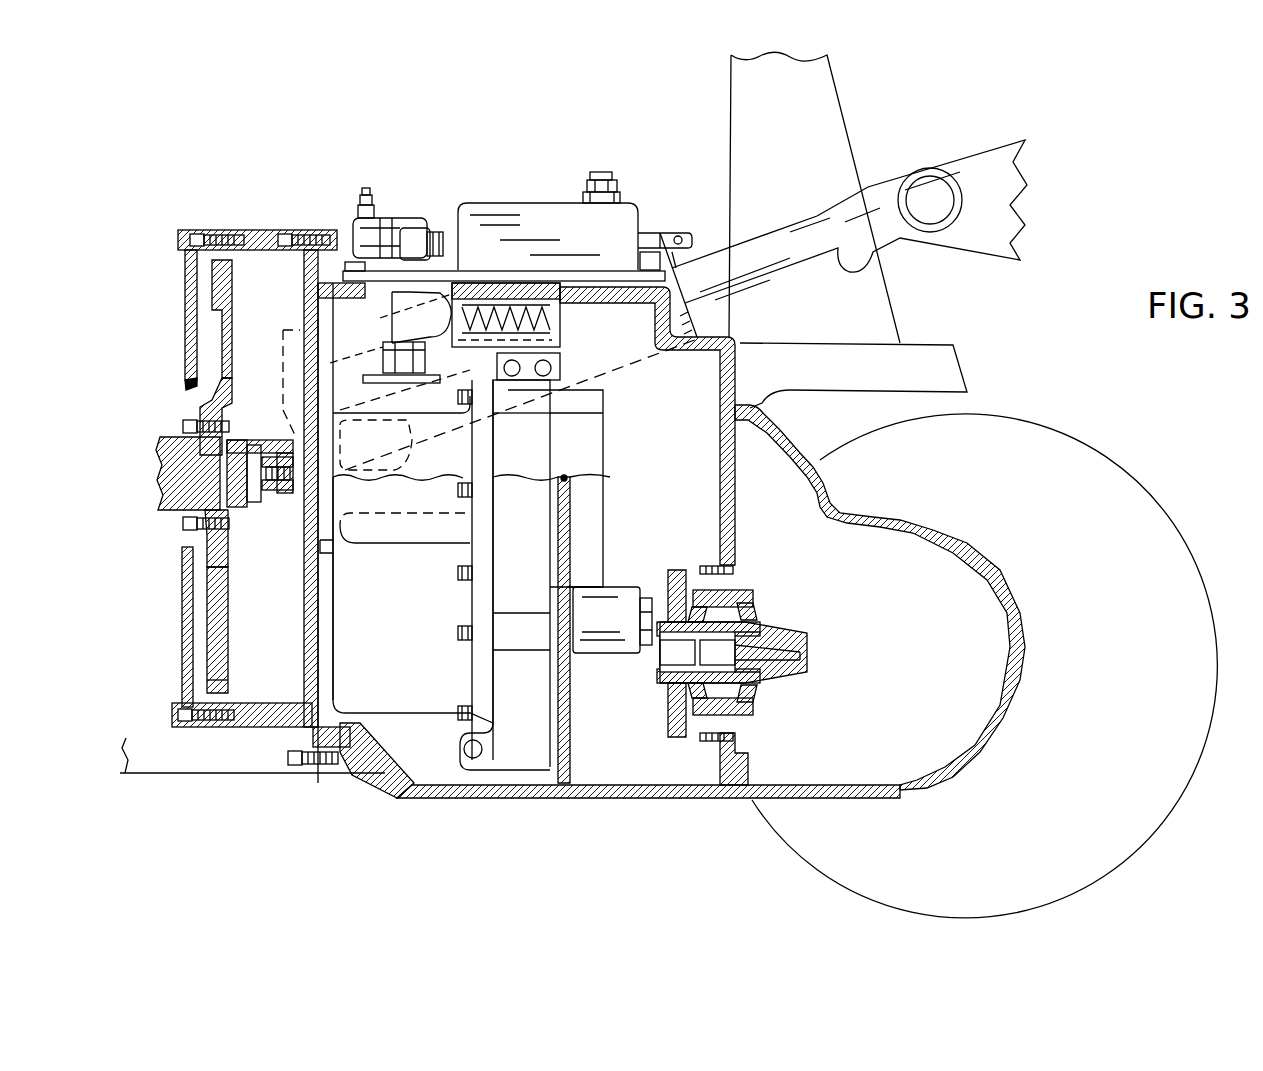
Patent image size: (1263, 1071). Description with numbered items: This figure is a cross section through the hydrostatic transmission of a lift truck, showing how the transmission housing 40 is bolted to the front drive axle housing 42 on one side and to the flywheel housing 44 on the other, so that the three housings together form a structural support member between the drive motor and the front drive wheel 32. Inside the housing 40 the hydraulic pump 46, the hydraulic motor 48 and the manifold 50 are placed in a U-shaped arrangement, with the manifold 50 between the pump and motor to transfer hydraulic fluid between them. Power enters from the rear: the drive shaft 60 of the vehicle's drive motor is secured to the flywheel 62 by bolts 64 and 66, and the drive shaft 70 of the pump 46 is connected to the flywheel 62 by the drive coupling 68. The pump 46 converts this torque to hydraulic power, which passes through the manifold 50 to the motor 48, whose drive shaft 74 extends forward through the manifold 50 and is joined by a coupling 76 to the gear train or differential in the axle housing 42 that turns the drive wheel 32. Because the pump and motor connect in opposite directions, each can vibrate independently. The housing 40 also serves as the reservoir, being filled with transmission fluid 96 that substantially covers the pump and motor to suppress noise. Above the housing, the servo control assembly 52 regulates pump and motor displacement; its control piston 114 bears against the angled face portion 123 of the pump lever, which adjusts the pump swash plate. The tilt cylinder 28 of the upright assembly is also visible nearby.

The tilt cylinder 28 is at (680, 258).
The drive wheel 32 is at (1058, 448).
The housing 40 is at (552, 793).
The front drive axle housing 42 is at (858, 798).
The flywheel housing 44 is at (255, 725).
The hydraulic pump 46 is at (458, 471).
The hydraulic motor 48 is at (417, 647).
The manifold 50 is at (535, 458).
The servo control assembly 52 is at (538, 203).
The drive shaft 60 is at (162, 498).
The flywheel 62 is at (230, 627).
The bolt 64 is at (228, 520).
The bolt 66 is at (232, 420).
The drive coupling 68 is at (285, 497).
The drive shaft 70 is at (287, 458).
The drive shaft 74 is at (617, 603).
The coupling 76 is at (650, 652).
The transmission fluid 96 is at (683, 528).
The control piston 114 is at (432, 325).
The angled face portion 123 is at (410, 290).